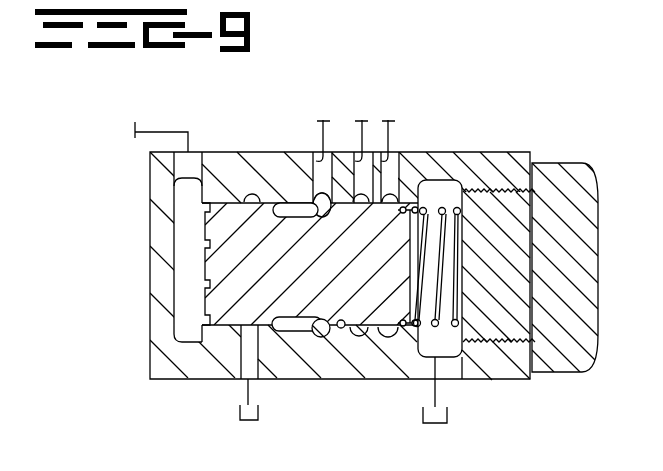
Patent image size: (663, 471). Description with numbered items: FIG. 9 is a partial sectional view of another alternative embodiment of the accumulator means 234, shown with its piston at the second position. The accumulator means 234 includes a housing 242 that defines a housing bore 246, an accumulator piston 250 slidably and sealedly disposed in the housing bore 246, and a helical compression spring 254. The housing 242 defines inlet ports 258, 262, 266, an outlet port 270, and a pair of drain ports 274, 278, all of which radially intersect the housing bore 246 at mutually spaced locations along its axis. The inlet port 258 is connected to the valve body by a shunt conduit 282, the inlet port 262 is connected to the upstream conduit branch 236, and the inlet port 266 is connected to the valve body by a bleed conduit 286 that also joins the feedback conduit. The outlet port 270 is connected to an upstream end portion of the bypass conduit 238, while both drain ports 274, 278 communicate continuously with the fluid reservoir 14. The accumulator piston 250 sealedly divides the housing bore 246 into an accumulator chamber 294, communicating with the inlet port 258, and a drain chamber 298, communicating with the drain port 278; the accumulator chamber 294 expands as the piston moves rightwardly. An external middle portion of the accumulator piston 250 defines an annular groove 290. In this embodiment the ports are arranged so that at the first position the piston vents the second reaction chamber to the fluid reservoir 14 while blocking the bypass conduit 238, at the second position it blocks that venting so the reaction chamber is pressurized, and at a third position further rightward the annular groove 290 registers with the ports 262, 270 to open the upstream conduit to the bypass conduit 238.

The fluid reservoir 14 is at (240, 412).
The accumulator means 234 is at (110, 290).
The upstream conduit branch 236 is at (316, 132).
The bypass conduit 238 is at (362, 150).
The housing 242 is at (149, 357).
The housing bore 246 is at (341, 327).
The accumulator piston 250 is at (326, 283).
The helical compression spring 254 is at (444, 181).
The inlet port 258 is at (200, 151).
The inlet port 262 is at (322, 150).
The inlet port 266 is at (397, 152).
The outlet port 270 is at (393, 150).
The drain port 274 is at (256, 368).
The drain port 278 is at (462, 370).
The shunt conduit 282 is at (168, 132).
The bleed conduit 286 is at (390, 128).
The annular groove 290 is at (312, 212).
The accumulator chamber 294 is at (185, 222).
The drain chamber 298 is at (436, 343).